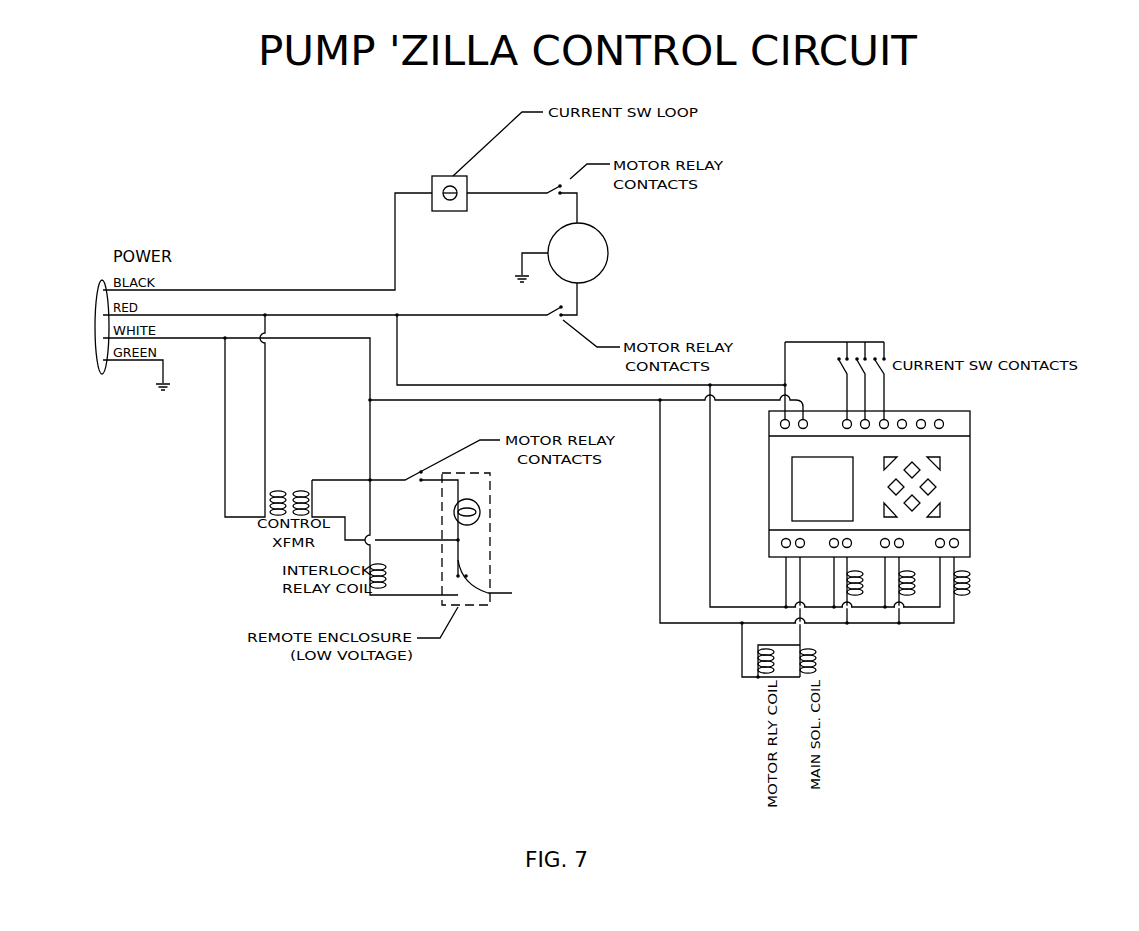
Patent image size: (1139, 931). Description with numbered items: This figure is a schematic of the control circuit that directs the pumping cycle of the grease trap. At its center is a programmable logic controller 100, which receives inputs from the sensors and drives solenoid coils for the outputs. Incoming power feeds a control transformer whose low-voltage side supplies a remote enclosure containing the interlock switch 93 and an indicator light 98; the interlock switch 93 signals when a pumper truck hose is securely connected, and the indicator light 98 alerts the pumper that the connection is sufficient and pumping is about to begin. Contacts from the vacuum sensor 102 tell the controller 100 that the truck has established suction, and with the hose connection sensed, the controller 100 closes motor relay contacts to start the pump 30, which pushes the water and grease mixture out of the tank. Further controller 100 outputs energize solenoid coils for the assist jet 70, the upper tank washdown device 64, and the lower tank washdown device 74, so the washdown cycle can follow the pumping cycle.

The pump 30 is at (608, 248).
The programmable logic controller 100 is at (957, 452).
The indicator light 98 is at (540, 527).
The interlock switch 93 is at (538, 602).
The vacuum sensor 102 is at (865, 183).
The assist jet 70 is at (858, 793).
The upper tank washdown device 64 is at (913, 795).
The lower tank washdown device 74 is at (973, 795).